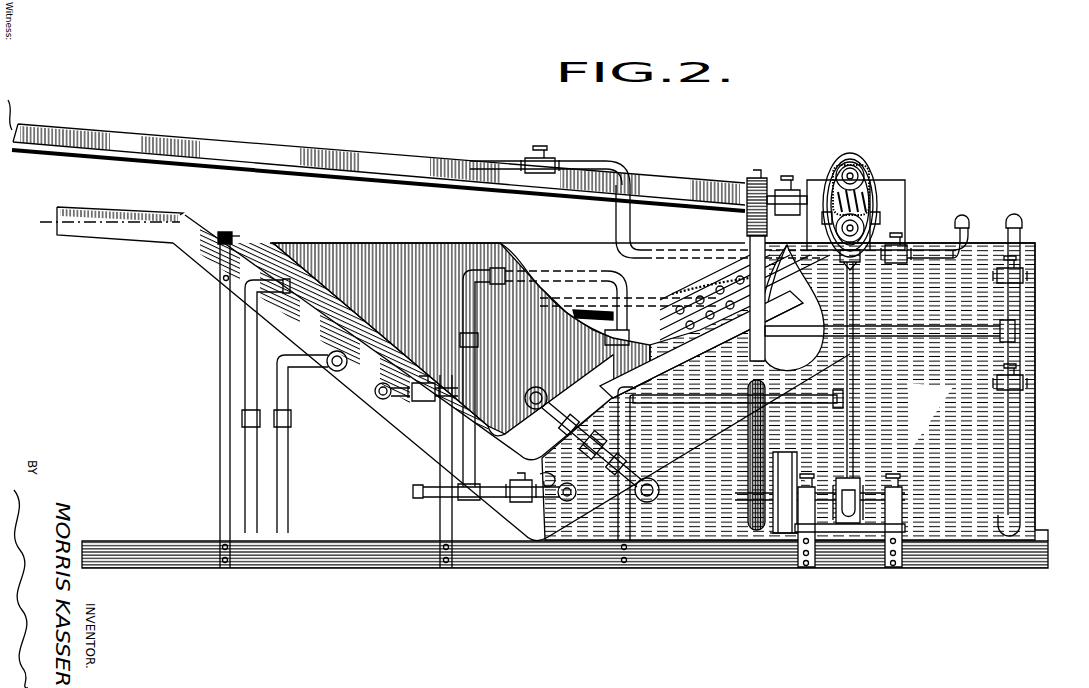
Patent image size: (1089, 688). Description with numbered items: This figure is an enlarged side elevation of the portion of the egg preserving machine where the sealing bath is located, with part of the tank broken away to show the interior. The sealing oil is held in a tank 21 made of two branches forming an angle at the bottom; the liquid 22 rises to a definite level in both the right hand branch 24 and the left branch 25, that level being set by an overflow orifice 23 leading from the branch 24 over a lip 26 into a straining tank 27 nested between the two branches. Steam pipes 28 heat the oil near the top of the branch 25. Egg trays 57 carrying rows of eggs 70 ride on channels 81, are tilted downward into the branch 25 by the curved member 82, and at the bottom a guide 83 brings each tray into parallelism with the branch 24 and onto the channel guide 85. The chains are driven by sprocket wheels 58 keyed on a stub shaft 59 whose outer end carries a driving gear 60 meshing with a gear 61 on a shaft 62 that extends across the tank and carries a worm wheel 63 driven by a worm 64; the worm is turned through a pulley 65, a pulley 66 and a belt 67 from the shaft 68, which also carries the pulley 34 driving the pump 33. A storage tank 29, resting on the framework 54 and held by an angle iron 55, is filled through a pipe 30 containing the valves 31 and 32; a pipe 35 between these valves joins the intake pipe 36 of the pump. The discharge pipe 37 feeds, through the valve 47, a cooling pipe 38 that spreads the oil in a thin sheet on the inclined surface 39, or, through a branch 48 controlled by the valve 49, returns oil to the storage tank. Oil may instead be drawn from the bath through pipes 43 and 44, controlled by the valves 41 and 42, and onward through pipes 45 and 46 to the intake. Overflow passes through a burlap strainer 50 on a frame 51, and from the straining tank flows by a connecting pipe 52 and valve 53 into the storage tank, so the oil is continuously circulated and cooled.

The tank 21 is at (205, 266).
The liquid 22 is at (701, 344).
The overflow orifice 23 is at (752, 284).
The right hand branch 24 is at (793, 308).
The left branch 25 is at (300, 318).
The lip 26 is at (692, 290).
The straining tank 27 is at (398, 298).
The steam pipes 28 is at (283, 393).
The storage tank 29 is at (940, 351).
The pipe 30 is at (1021, 354).
The valve 31 is at (1027, 275).
The valve 32 is at (1027, 384).
The pump 33 is at (859, 478).
The pulley 34 is at (770, 529).
The pipe 35 is at (926, 329).
The intake pipe 36 is at (823, 405).
The discharge pipe 37 is at (847, 385).
The cooling pipe 38 is at (494, 167).
The inclined surface 39 is at (292, 167).
The valve 41 is at (392, 400).
The valve 42 is at (525, 505).
The pipe 43 is at (418, 403).
The pipe 44 is at (486, 499).
The pipe 45 is at (440, 450).
The pipe 46 is at (563, 276).
The valve 47 is at (552, 165).
The branch 48 is at (937, 260).
The valve 49 is at (893, 267).
The strainer 50 is at (660, 300).
The frame 51 is at (635, 297).
The connecting pipe 52 is at (632, 420).
The valve 53 is at (572, 411).
The framework 54 is at (362, 547).
The angle iron 55 is at (1041, 539).
The egg trays 57 is at (708, 350).
The sprocket wheels 58 is at (835, 222).
The stub shaft 59 is at (862, 228).
The driving gear 60 is at (870, 233).
The gear 61 is at (832, 160).
The shaft 62 is at (856, 178).
The worm wheel 63 is at (860, 190).
The worm 64 is at (870, 200).
The pulley 65 is at (750, 180).
The pulley 66 is at (773, 476).
The belt 67 is at (748, 451).
The shaft 68 is at (735, 497).
The eggs 70 is at (748, 306).
The channels 81 is at (90, 242).
The curved member 82 is at (224, 232).
The guide 83 is at (552, 471).
The channel guide 85 is at (792, 292).